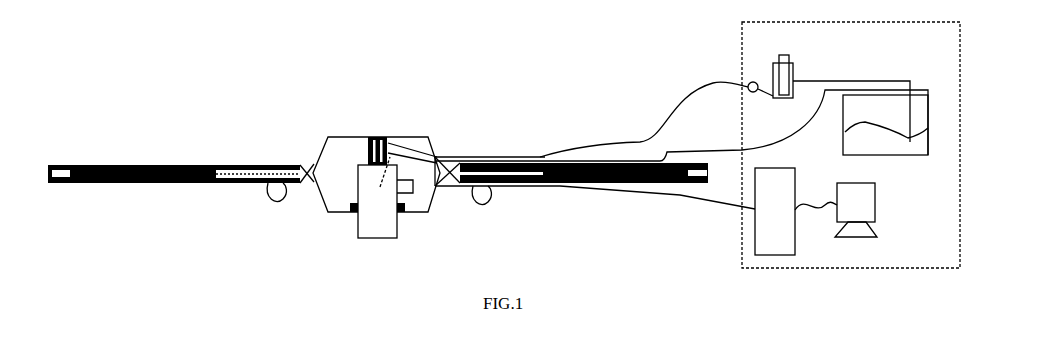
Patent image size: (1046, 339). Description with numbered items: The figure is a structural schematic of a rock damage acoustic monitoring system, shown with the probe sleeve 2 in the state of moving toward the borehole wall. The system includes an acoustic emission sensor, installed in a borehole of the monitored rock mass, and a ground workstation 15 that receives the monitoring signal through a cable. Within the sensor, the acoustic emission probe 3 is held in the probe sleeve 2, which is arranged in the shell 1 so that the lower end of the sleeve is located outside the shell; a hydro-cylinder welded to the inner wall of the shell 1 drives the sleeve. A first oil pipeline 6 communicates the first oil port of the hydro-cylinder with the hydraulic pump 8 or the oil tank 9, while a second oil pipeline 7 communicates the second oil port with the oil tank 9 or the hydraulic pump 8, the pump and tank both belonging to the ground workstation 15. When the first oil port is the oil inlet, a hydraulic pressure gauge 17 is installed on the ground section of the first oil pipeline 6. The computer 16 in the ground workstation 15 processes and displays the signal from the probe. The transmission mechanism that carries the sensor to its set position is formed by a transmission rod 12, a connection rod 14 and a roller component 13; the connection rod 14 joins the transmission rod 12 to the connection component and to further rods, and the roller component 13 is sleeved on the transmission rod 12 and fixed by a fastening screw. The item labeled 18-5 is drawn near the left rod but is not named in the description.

The shell 1 is at (357, 136).
The probe sleeve 2 is at (400, 227).
The acoustic emission probe 3 is at (392, 137).
The first oil pipeline 6 is at (581, 142).
The second oil pipeline 7 is at (616, 160).
The hydraulic pump 8 is at (795, 62).
The oil tank 9 is at (922, 103).
The transmission rod 12 is at (537, 160).
The roller component 13 is at (490, 197).
The connection rod 14 is at (502, 160).
The ground workstation 15 is at (820, 145).
The computer 16 is at (795, 183).
The hydraulic pressure gauge 17 is at (767, 105).
The pipe section 18-5 is at (174, 148).